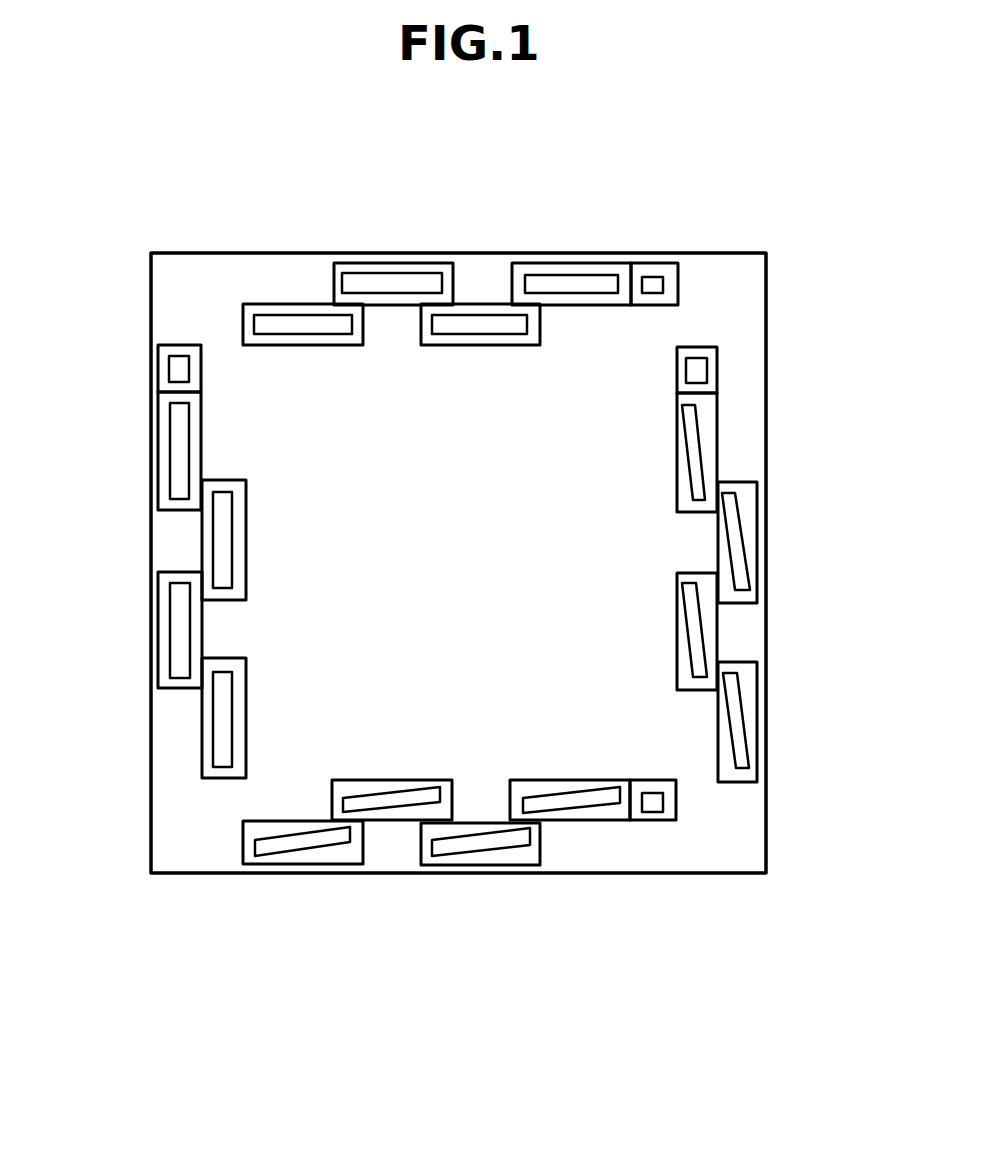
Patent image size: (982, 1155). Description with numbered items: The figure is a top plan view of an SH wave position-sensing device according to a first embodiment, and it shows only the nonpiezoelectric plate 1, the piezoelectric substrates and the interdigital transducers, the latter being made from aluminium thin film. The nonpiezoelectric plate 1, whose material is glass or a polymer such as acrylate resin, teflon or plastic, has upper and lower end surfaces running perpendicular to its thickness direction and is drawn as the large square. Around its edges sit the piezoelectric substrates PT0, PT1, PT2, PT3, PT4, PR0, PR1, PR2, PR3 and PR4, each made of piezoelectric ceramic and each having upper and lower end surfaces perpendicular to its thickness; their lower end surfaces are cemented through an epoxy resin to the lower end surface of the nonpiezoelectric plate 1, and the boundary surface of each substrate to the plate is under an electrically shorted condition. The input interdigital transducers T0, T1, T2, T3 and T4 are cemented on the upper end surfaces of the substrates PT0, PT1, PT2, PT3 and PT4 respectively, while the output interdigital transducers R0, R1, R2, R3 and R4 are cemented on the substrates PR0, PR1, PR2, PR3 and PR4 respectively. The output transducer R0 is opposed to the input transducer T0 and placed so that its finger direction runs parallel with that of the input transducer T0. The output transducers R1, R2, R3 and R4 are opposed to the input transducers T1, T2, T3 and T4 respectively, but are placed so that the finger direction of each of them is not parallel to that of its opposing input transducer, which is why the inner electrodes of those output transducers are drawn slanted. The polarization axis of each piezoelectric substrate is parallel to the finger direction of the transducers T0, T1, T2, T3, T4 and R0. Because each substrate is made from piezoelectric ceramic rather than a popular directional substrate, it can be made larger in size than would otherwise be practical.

The nonpiezoelectric plate 1 is at (192, 852).
The input interdigital transducer T0 is at (658, 287).
The input interdigital transducer T1 is at (558, 285).
The input interdigital transducer T2 is at (468, 322).
The input interdigital transducer T3 is at (363, 285).
The input interdigital transducer T4 is at (277, 322).
The output interdigital transducer R0 is at (657, 802).
The output interdigital transducer R1 is at (555, 802).
The output interdigital transducer R2 is at (455, 845).
The output interdigital transducer R3 is at (383, 802).
The output interdigital transducer R4 is at (270, 850).
The piezoelectric substrate PT0 is at (639, 272).
The piezoelectric substrate PT1 is at (600, 272).
The piezoelectric substrate PT2 is at (492, 310).
The piezoelectric substrate PT3 is at (397, 272).
The piezoelectric substrate PT4 is at (302, 308).
The piezoelectric substrate PR0 is at (648, 813).
The piezoelectric substrate PR1 is at (600, 810).
The piezoelectric substrate PR2 is at (503, 853).
The piezoelectric substrate PR3 is at (400, 813).
The piezoelectric substrate PR4 is at (312, 857).